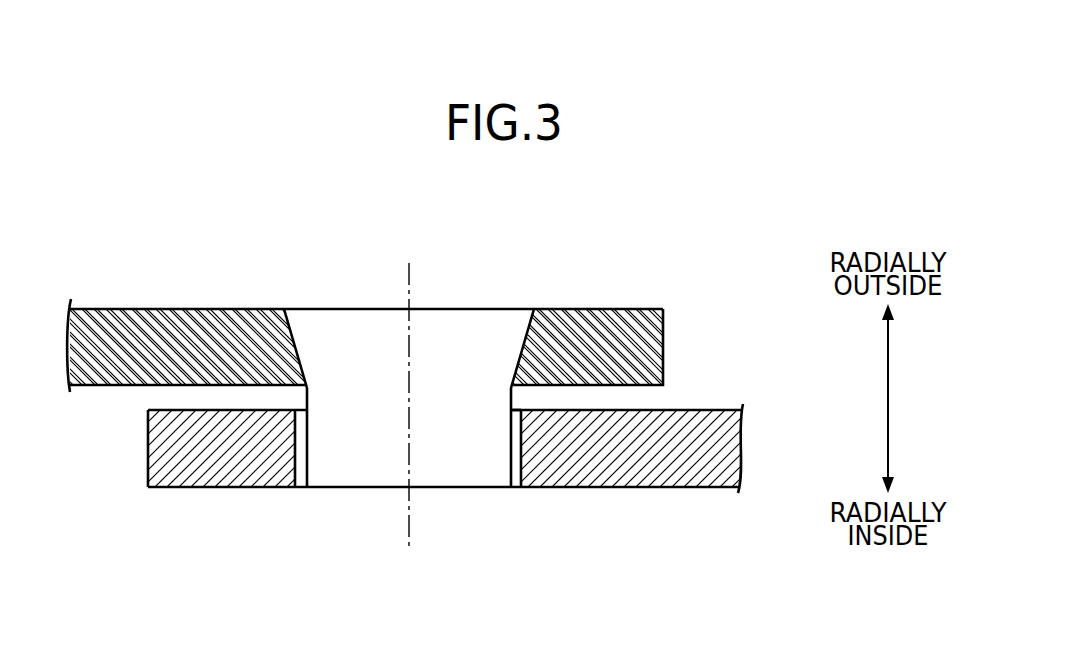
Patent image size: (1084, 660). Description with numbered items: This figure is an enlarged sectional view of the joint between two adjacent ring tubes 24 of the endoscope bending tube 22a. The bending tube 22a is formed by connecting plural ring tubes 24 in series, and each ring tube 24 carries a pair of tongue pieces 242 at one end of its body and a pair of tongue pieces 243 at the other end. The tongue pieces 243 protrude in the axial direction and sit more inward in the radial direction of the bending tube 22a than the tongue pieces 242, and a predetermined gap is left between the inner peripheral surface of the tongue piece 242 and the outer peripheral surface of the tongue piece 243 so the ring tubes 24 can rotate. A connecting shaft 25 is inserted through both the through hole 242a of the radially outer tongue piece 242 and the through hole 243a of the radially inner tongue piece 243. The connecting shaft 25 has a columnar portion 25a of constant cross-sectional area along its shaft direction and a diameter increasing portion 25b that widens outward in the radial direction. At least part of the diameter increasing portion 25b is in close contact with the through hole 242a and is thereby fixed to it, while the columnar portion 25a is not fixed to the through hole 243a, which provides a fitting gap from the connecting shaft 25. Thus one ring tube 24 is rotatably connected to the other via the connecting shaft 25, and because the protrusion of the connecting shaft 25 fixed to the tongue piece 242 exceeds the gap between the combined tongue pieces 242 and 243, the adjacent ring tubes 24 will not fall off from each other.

The bending tube 22a is at (100, 272).
The ring tube 24 is at (713, 386).
The tongue piece 242 is at (632, 309).
The through hole 242a is at (294, 375).
The tongue piece 243 is at (195, 488).
The through hole 243a is at (296, 463).
The connecting shaft 25 is at (447, 283).
The columnar portion 25a is at (513, 463).
The diameter increasing portion 25b is at (533, 333).